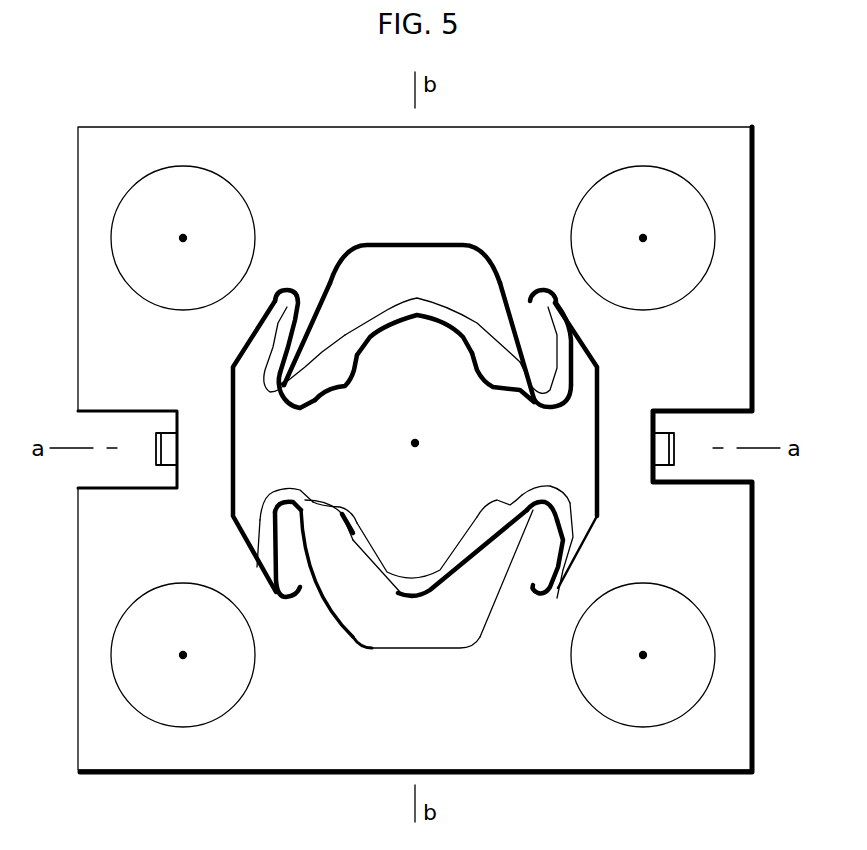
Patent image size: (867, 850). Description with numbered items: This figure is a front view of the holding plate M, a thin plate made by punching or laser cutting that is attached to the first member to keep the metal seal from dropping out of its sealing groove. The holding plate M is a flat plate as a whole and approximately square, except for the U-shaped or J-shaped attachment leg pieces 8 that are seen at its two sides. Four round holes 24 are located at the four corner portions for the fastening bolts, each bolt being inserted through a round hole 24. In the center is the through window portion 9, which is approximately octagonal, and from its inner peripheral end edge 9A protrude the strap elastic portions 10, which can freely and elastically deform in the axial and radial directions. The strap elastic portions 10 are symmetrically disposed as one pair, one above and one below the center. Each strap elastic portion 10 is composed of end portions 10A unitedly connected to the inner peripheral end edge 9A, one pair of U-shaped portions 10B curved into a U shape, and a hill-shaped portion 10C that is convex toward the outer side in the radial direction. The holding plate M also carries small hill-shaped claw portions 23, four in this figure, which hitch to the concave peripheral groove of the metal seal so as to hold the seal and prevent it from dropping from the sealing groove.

The holding plate M is at (77, 221).
The attachment leg piece 8 is at (153, 452).
The through window portion 9 is at (431, 363).
The inner peripheral end edge 9A is at (263, 386).
The strap elastic portion 10 is at (373, 338).
The end portion 10A is at (280, 312).
The U-shaped portion 10B is at (268, 388).
The hill-shaped portion 10C is at (405, 307).
The claw portion 23 is at (343, 382).
The round hole 24 is at (169, 211).